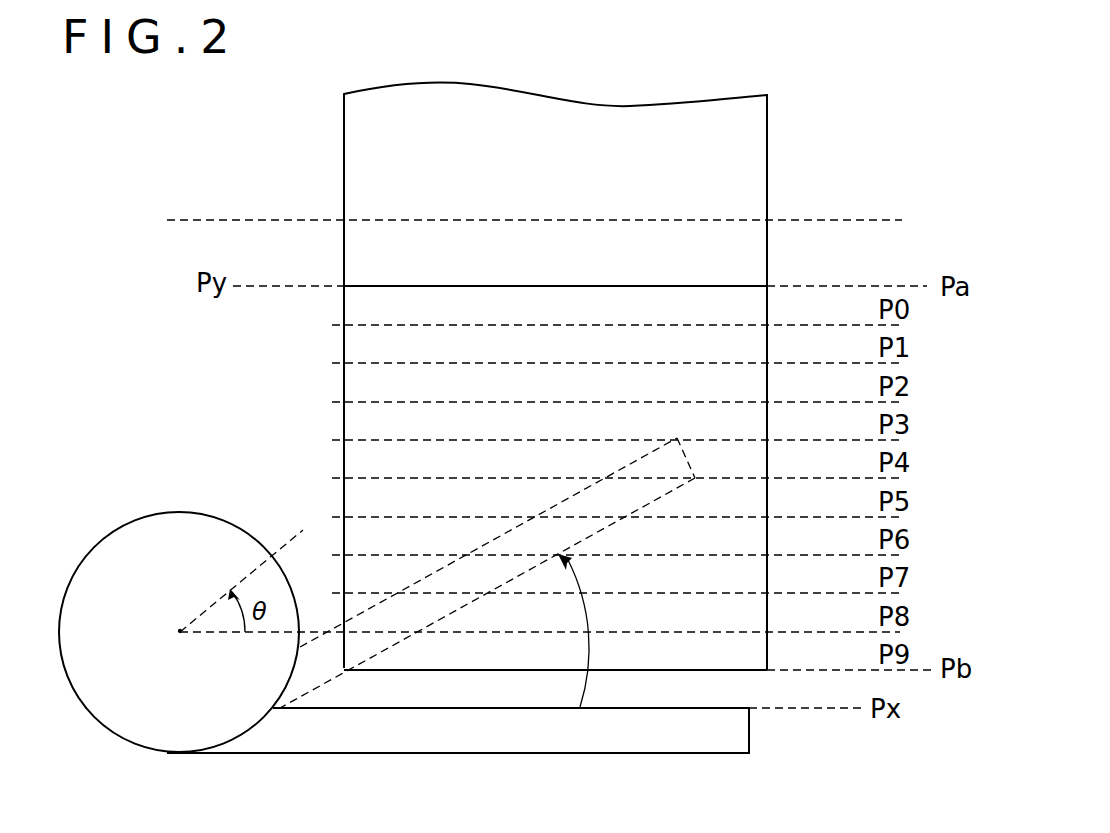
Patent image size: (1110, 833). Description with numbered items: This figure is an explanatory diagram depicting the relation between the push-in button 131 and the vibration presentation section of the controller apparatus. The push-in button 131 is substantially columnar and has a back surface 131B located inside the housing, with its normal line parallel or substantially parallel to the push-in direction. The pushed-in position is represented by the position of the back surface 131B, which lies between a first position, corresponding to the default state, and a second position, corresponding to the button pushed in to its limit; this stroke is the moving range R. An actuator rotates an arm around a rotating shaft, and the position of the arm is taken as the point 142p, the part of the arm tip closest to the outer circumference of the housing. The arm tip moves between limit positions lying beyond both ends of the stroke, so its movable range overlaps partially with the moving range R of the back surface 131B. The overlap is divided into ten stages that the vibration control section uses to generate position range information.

The push-in button 131 is at (752, 170).
The back surface 131B is at (715, 290).
The point 142p is at (673, 437).
The moving range R is at (344, 306).